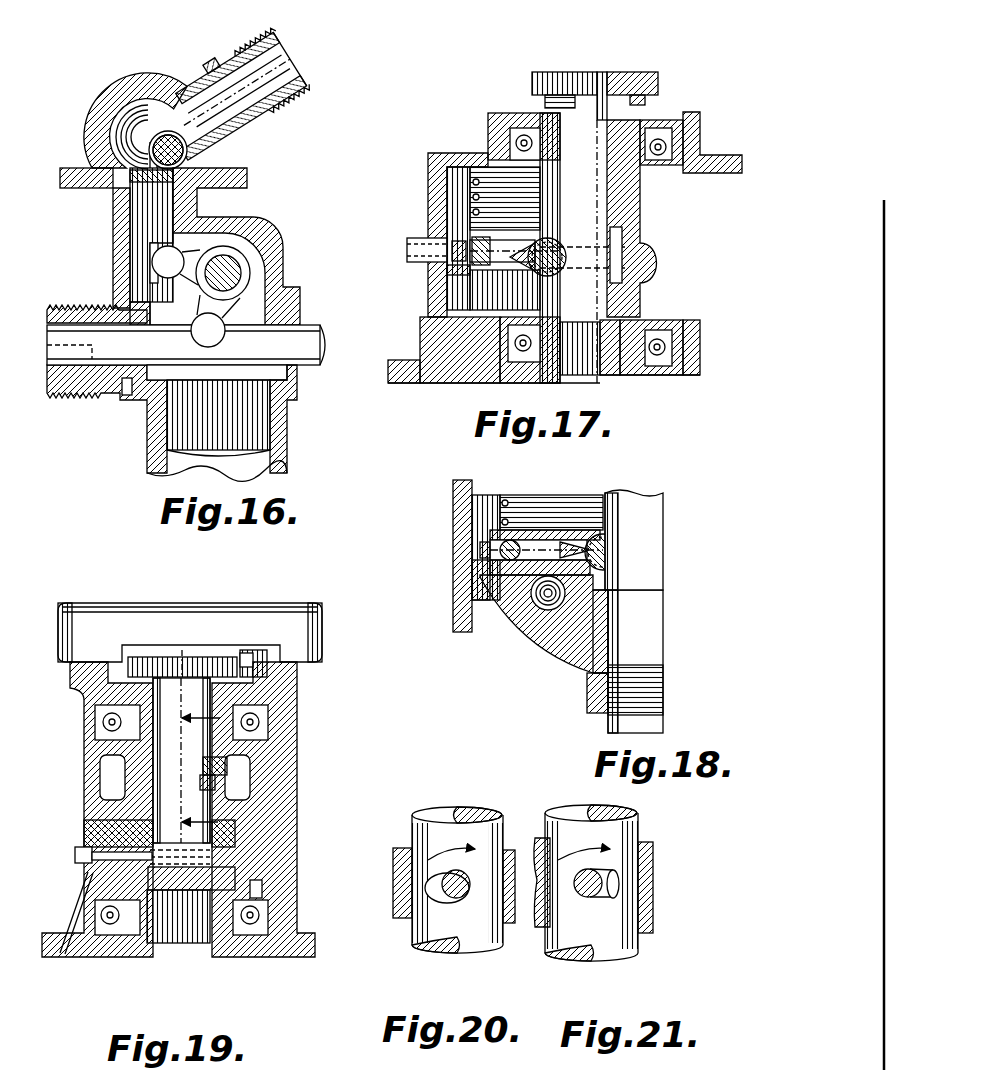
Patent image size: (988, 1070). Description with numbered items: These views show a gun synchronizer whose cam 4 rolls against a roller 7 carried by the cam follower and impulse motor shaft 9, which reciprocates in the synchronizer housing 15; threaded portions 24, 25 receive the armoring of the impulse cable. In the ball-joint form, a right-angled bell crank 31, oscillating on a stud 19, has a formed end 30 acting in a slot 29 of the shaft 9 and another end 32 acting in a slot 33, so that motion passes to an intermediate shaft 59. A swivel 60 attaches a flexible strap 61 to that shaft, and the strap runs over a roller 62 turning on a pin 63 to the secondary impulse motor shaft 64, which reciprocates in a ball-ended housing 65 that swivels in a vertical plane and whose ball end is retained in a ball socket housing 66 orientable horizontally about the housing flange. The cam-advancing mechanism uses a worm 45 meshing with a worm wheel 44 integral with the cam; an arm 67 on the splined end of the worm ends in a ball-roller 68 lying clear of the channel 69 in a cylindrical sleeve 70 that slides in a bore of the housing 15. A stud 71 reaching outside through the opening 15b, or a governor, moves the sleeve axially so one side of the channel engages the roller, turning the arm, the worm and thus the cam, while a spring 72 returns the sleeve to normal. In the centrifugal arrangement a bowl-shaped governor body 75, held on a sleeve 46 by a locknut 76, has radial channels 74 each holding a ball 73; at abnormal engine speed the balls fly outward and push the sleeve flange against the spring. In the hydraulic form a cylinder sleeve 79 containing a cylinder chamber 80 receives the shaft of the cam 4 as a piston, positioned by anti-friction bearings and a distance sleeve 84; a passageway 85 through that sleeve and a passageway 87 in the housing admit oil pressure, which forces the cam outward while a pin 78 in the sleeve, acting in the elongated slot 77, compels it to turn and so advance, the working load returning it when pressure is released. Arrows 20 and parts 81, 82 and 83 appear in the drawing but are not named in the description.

In FIG. 16, the cam 4 is at (202, 428).
In FIG. 17, the cam 4 is at (617, 210).
In FIG. 19, the cam 4 is at (180, 670).
In FIG. 20, the cam 4 is at (455, 832).
In FIG. 21, the cam 4 is at (583, 830).
In FIG. 16, the roller 7 is at (273, 380).
In FIG. 19, the roller 7 is at (248, 660).
In FIG. 16, the cam follower and impulse motor shaft 9 is at (300, 347).
In FIG. 19, the cam follower and impulse motor shaft 9 is at (298, 617).
In FIG. 16, the synchronizer housing 15 is at (277, 447).
In FIG. 17, the synchronizer housing 15 is at (430, 178).
In FIG. 18, the synchronizer housing 15 is at (453, 495).
In FIG. 19, the synchronizer housing 15 is at (93, 685).
In FIG. 17, the opening 15b is at (428, 250).
In FIG. 16, the stud 19 is at (258, 262).
In FIG. 19, the direction arrow 20 is at (192, 758).
In FIG. 16, the threaded portion 24 is at (241, 44).
In FIG. 16, the threaded portion 25 is at (63, 390).
In FIG. 16, the slot 29 is at (193, 343).
In FIG. 16, the formed end 30 is at (208, 330).
In FIG. 16, the bell crank 31 is at (233, 275).
In FIG. 16, the bell-crank end 32 is at (168, 262).
In FIG. 16, the slot 33 is at (150, 254).
In FIG. 17, the worm wheel 44 is at (620, 250).
In FIG. 17, the worm 45 is at (557, 250).
In FIG. 18, the worm 45 is at (622, 553).
In FIG. 18, the sleeve 46 is at (647, 530).
In FIG. 16, the intermediate shaft 59 is at (153, 234).
In FIG. 16, the swivel 60 is at (120, 193).
In FIG. 16, the strap 61 is at (153, 142).
In FIG. 16, the roller 62 is at (190, 147).
In FIG. 16, the pin 63 is at (163, 135).
In FIG. 16, the secondary impulse motor shaft 64 is at (267, 77).
In FIG. 16, the ball-ended housing 65 is at (268, 40).
In FIG. 16, the ball socket housing 66 is at (80, 160).
In FIG. 17, the arm 67 is at (537, 283).
In FIG. 18, the arm 67 is at (543, 547).
In FIG. 17, the ball-roller 68 is at (438, 238).
In FIG. 18, the ball-roller 68 is at (482, 575).
In FIG. 17, the channel 69 is at (447, 285).
In FIG. 18, the channel 69 is at (480, 557).
In FIG. 17, the cylindrical sleeve 70 is at (440, 207).
In FIG. 18, the cylindrical sleeve 70 is at (478, 528).
In FIG. 17, the stud 71 is at (438, 264).
In FIG. 17, the spring 72 is at (480, 170).
In FIG. 18, the spring 72 is at (510, 495).
In FIG. 18, the ball 73 is at (543, 593).
In FIG. 18, the radial channel 74 is at (573, 605).
In FIG. 18, the governor body 75 is at (600, 657).
In FIG. 18, the locknut 76 is at (597, 697).
In FIG. 19, the elongated slot 77 is at (205, 763).
In FIG. 20, the elongated slot 77 is at (433, 895).
In FIG. 21, the elongated slot 77 is at (613, 878).
In FIG. 19, the pin 78 is at (205, 782).
In FIG. 20, the pin 78 is at (443, 879).
In FIG. 21, the pin 78 is at (590, 897).
In FIG. 19, the cylinder sleeve 79 is at (142, 760).
In FIG. 20, the cylinder sleeve 79 is at (400, 902).
In FIG. 21, the cylinder sleeve 79 is at (653, 858).
In FIG. 19, the cylinder chamber 80 is at (173, 847).
In FIG. 19, the plate 81 is at (120, 823).
In FIG. 19, the rod 82 is at (125, 862).
In FIG. 19, the sleeve 83 is at (232, 833).
In FIG. 19, the distance sleeve 84 is at (100, 755).
In FIG. 19, the passageway 85 is at (73, 862).
In FIG. 19, the passageway 87 is at (68, 913).